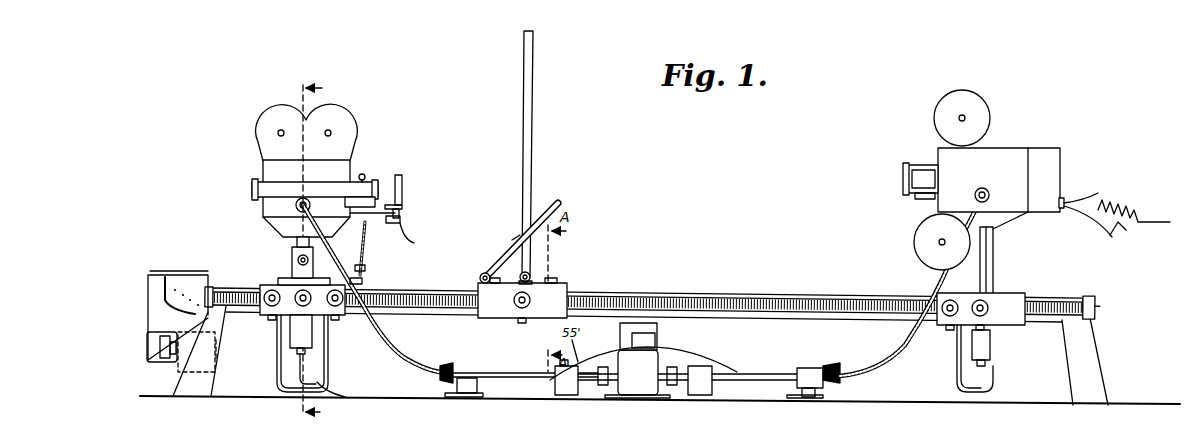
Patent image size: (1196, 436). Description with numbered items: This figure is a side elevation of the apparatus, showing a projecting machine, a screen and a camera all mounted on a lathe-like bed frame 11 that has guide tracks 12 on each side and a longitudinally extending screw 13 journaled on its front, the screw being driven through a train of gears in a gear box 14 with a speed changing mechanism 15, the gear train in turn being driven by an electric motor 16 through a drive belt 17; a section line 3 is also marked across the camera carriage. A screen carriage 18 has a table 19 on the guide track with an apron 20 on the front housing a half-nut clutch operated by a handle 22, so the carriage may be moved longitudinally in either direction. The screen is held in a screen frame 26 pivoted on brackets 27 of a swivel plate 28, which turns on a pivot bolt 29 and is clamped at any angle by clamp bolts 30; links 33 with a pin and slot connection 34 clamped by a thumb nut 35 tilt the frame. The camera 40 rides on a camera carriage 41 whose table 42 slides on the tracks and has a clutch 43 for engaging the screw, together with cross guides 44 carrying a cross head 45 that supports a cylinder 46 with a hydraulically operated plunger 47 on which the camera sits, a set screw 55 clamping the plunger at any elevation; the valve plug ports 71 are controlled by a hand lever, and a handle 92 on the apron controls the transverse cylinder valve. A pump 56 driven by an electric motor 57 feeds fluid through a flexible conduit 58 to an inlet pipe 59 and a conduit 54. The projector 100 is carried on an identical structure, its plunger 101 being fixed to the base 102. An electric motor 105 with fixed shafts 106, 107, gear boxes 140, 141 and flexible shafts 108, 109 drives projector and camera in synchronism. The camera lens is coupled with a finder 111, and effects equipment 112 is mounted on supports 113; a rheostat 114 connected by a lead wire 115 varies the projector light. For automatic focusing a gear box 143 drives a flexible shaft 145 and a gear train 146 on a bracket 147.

The section line 3- 3 is at (312, 247).
The bed frame 11 is at (806, 290).
The guide tracks 12 is at (858, 290).
The longitudinally extending screw 13 is at (736, 300).
The gear box 14 is at (195, 271).
The speed changing mechanism 15 is at (157, 297).
The electric motor 16 is at (178, 360).
The drive belt 17 is at (147, 345).
The screen carriage 18 is at (570, 284).
The table 19 is at (481, 290).
The apron 20 is at (495, 312).
The handle 22 is at (522, 312).
The screen frame 26 is at (531, 145).
The brackets 27 is at (540, 266).
The swivel plate 28 is at (560, 278).
The pivot bolt 29 is at (549, 299).
The clamp bolts 30 is at (489, 272).
The links 33 is at (512, 240).
The pin and slot connection 34 is at (530, 270).
The thumb nut 35 is at (552, 210).
The camera 40 is at (356, 152).
The camera carriage 41 is at (270, 284).
The table 42 is at (262, 290).
The clutch 43 is at (336, 320).
The cross guides 44 is at (283, 278).
The cross head 45 is at (358, 258).
The cylinder 46 is at (292, 251).
The plunger 47 is at (300, 250).
The conduit 54 is at (277, 371).
The set screw 55 is at (328, 257).
The pump 56 is at (620, 336).
The electric motor 57 is at (652, 341).
The flexible conduit 58 is at (702, 356).
The inlet pipe 59 is at (336, 386).
The port / hand lever 71 is at (270, 308).
The handle 92 is at (296, 320).
The projector 100 is at (1020, 138).
The plunger 101 is at (994, 262).
The base 102 is at (1010, 214).
The electric motor 105 is at (652, 376).
The fixed shaft 106 is at (792, 370).
The fixed shaft 107 is at (508, 371).
The flexible shaft 108 is at (890, 358).
The flexible shaft 109 is at (396, 348).
The finder 111 is at (363, 174).
The equipment 112 is at (401, 175).
The supports 113 is at (416, 233).
The rheostat 114 is at (1130, 226).
The lead wire 115 is at (1098, 193).
The gear box 140 is at (566, 395).
The gear box 141 is at (700, 395).
The gear box 143 is at (364, 283).
The flexible shaft 145 is at (368, 269).
The gear train 146 is at (352, 192).
The bracket 147 is at (372, 197).